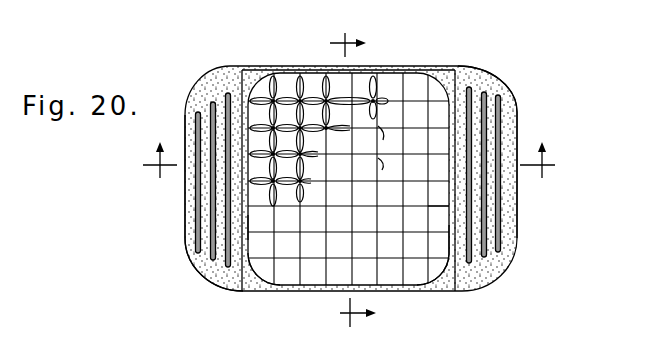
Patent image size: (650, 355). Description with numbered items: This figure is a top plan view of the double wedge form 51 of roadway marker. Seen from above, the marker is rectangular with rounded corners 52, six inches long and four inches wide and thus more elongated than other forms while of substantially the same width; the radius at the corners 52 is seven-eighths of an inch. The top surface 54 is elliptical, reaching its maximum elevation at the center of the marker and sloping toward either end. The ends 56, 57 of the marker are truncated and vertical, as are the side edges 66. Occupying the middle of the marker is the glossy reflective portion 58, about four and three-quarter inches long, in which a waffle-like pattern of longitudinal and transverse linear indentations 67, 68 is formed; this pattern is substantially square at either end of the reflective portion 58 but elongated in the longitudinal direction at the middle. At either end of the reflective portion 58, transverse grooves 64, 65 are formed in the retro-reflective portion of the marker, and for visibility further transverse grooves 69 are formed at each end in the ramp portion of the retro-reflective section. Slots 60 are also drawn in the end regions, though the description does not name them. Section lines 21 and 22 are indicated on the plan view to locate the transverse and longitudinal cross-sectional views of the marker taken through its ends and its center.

The section line 21- 21 is at (353, 161).
The section line 22- 22 is at (353, 179).
The double wedge form 51 is at (438, 61).
The rounded corners 52 is at (490, 73).
The top surface 54 is at (357, 80).
The end 56 is at (185, 205).
The end 57 is at (517, 200).
The reflective portion 58 is at (388, 78).
The slots 60 is at (200, 196).
The transverse groove 64 is at (452, 237).
The transverse groove 65 is at (250, 228).
The side edges 66 is at (306, 67).
The longitudinal linear indentations 67 is at (386, 158).
The transverse linear indentations 68 is at (438, 208).
The transverse grooves 69 is at (257, 283).